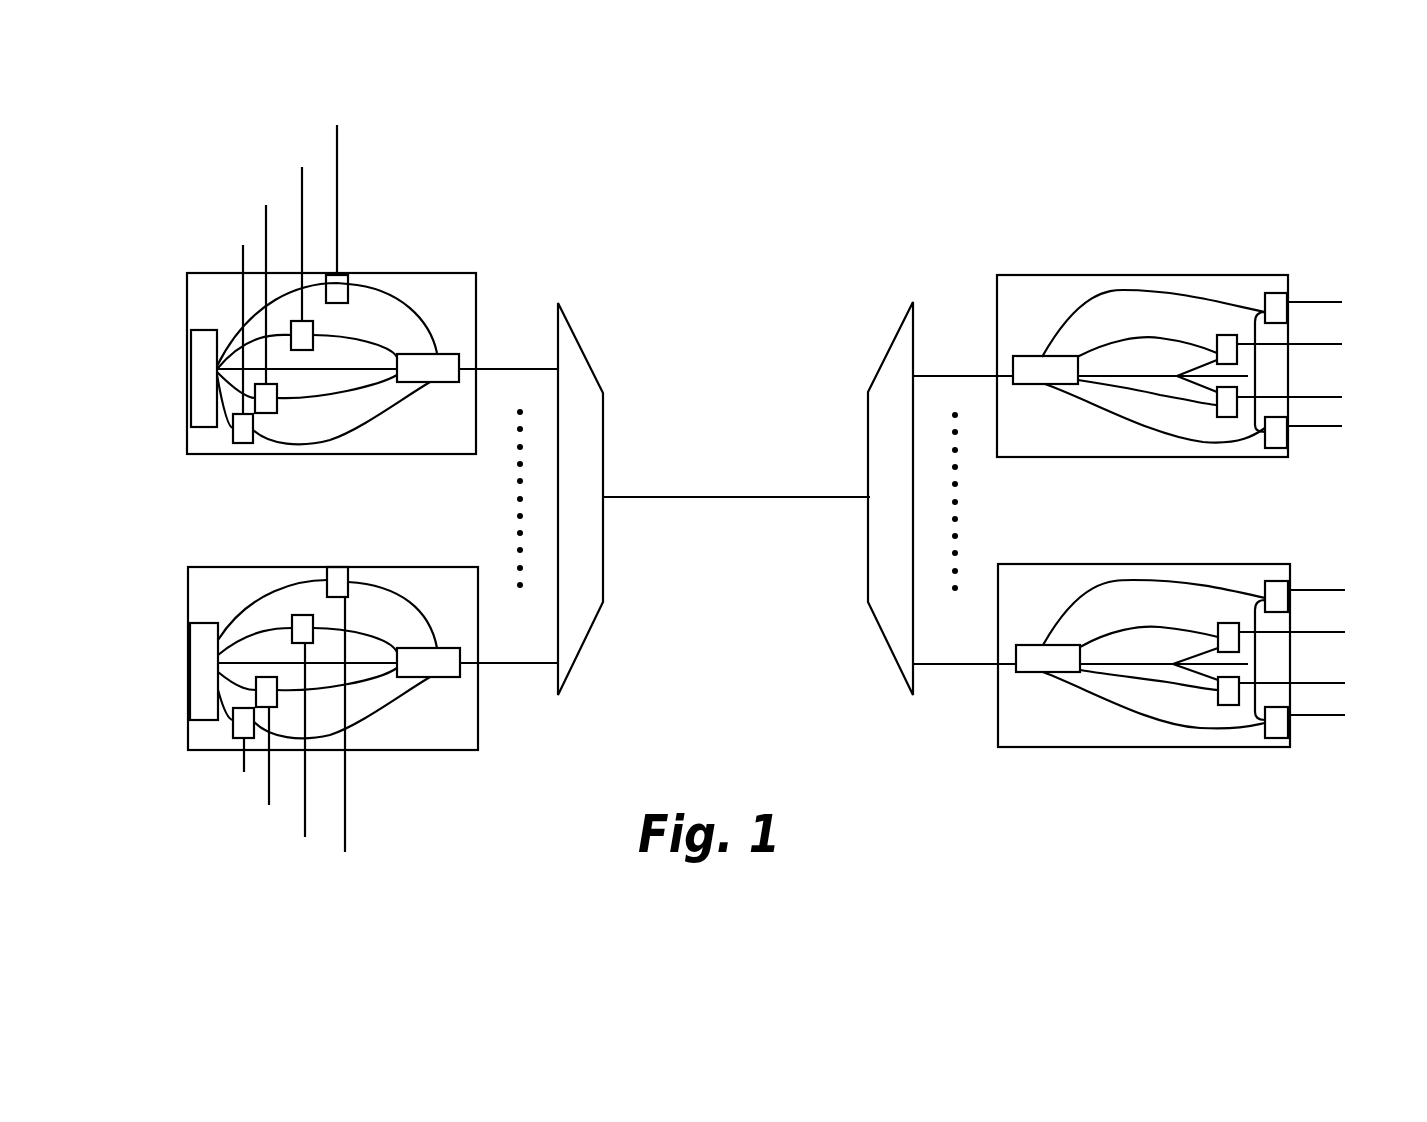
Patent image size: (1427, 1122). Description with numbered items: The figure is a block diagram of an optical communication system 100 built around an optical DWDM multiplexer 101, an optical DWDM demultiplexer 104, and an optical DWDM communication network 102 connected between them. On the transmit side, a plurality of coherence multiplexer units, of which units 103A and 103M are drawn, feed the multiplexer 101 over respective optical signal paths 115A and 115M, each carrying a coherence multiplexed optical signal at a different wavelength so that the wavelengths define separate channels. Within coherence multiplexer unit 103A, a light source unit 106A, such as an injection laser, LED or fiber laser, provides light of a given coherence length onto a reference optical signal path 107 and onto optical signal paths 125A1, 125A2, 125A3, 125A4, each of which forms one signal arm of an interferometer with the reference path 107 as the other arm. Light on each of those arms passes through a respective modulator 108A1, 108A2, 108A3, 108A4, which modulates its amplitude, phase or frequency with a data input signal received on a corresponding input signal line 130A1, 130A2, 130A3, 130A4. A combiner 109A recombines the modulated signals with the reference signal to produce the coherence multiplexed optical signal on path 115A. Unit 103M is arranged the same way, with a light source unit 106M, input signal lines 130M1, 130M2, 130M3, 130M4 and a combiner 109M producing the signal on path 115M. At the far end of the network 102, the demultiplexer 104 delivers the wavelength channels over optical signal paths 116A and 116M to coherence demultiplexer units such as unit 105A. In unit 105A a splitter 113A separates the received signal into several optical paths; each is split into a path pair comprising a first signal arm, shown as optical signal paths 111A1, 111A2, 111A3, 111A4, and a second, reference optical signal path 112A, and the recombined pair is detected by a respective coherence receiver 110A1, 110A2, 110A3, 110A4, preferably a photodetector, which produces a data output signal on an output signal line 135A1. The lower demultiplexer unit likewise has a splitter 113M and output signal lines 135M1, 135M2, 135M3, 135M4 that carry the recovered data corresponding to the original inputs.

The optical communication system 100 is at (968, 108).
The optical DWDM multiplexer 101 is at (597, 362).
The optical DWDM communication network 102 is at (736, 514).
The optical DWDM demultiplexer 104 is at (866, 385).
The coherence multiplexer unit 103A is at (427, 264).
The coherence multiplexer unit 103M is at (414, 754).
The coherence demultiplexer unit 105A is at (1076, 271).
The light source unit 106A is at (191, 374).
The light source unit 106M is at (189, 674).
The reference optical signal path 107 is at (327, 373).
The modulator 108A1 is at (348, 272).
The modulator 108A2 is at (306, 354).
The modulator 108A3 is at (266, 417).
The modulator 108A4 is at (237, 447).
The combiner 109A is at (442, 386).
The combiner 109M is at (428, 662).
The coherence receiver 110A1 is at (1279, 287).
The coherence receiver 110A2 is at (1226, 330).
The coherence receiver 110A3 is at (1234, 420).
The coherence receiver 110A4 is at (1283, 453).
The optical signal path 111A1 is at (1056, 332).
The optical signal path 111A2 is at (1130, 334).
The optical signal path 111A3 is at (1144, 398).
The optical signal path 111A4 is at (1171, 441).
The reference optical signal path 112A is at (1127, 380).
The splitter 113A is at (1026, 388).
The splitter 113M is at (1034, 674).
The optical signal path 115A is at (521, 331).
The optical signal path 115M is at (534, 671).
The optical signal path 116A is at (964, 331).
The optical signal path 116M is at (959, 669).
The optical signal path 125A1 is at (437, 325).
The optical signal path 125A2 is at (356, 331).
The optical signal path 125A3 is at (344, 395).
The optical signal path 125A4 is at (381, 420).
The input signal line 130A1 is at (309, 180).
The input signal line 130A2 is at (273, 223).
The input signal line 130A3 is at (234, 276).
The input signal line 130A4 is at (213, 310).
The input signal line 130M1 is at (371, 733).
The input signal line 130M2 is at (300, 749).
The input signal line 130M3 is at (259, 759).
The input signal line 130M4 is at (229, 755).
The output signal line 135A1 is at (1330, 370).
The output signal line 135M1 is at (1357, 599).
The output signal line 135M2 is at (1333, 642).
The output signal line 135M3 is at (1333, 692).
The output signal line 135M4 is at (1357, 727).